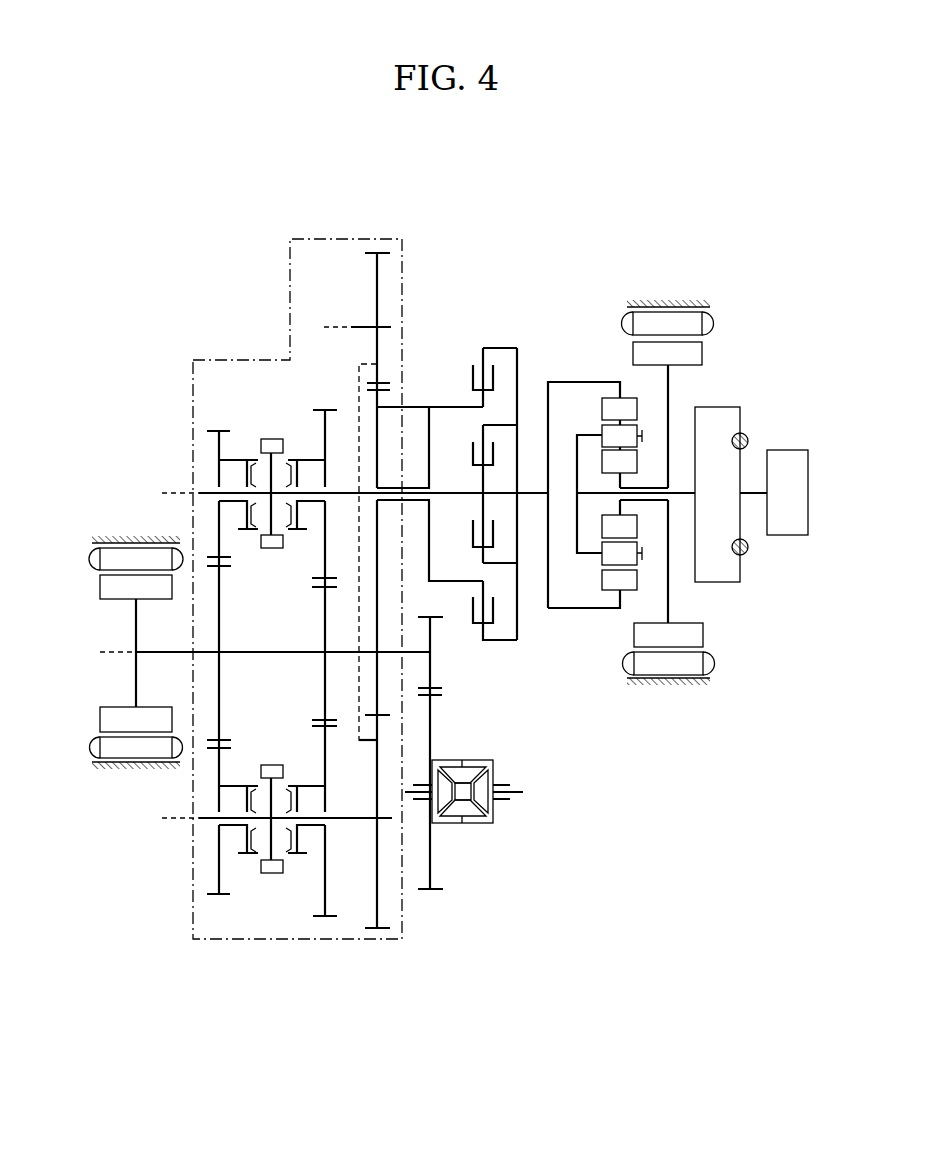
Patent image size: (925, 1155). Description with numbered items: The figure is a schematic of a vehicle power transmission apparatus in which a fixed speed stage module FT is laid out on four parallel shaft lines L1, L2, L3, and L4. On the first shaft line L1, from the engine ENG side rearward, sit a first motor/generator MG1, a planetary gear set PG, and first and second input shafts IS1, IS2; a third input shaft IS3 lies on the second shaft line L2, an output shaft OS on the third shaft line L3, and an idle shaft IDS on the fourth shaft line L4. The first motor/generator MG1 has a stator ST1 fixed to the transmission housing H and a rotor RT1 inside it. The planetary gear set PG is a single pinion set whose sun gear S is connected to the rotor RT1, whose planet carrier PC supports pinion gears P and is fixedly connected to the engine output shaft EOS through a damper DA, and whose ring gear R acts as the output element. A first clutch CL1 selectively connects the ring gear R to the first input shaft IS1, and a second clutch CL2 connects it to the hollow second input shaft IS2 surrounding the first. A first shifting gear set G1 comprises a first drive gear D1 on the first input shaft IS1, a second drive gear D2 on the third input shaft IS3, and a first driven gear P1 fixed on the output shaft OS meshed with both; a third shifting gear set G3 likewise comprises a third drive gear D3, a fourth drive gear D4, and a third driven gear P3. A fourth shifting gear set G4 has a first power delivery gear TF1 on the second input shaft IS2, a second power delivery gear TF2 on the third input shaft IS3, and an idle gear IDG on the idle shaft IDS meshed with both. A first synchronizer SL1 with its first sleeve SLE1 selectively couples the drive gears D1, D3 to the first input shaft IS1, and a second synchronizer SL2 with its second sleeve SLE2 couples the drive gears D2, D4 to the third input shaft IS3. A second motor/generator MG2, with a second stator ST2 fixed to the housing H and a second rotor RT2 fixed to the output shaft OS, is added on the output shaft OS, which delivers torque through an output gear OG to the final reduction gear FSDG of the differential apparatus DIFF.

The fixed speed stage module FT is at (395, 233).
The idle gear IDG is at (383, 277).
The idle shaft IDS is at (380, 353).
The fourth shaft line L4 is at (325, 326).
The first power delivery gear TF1 is at (380, 406).
The second power delivery gear TF2 is at (388, 910).
The first clutch CL1 is at (496, 425).
The second clutch CL2 is at (490, 352).
The planetary gear set PG is at (602, 375).
The planet carrier PC is at (590, 433).
The ring gear R is at (619, 409).
The pinion gears P is at (622, 436).
The sun gear S is at (619, 461).
The transmission housing H is at (672, 305).
The stator ST1 is at (668, 323).
The rotor RT1 is at (669, 508).
The first motor/generator MG1 is at (712, 312).
The second stator ST2 is at (136, 559).
The second rotor RT2 is at (136, 666).
The second motor/generator MG2 is at (92, 548).
The damper DA is at (748, 437).
The engine ENG is at (787, 492).
The engine output shaft EOS is at (757, 500).
The first shaft line L1 is at (453, 492).
The second shaft line L2 is at (266, 817).
The third shaft line L3 is at (252, 651).
The first input shaft IS1 is at (452, 490).
The second input shaft IS2 is at (430, 506).
The third input shaft IS3 is at (350, 822).
The first drive gear D1 is at (217, 452).
The second drive gear D2 is at (217, 883).
The third drive gear D3 is at (326, 462).
The fourth drive gear D4 is at (325, 878).
The first driven gear P1 is at (219, 608).
The third driven gear P3 is at (325, 605).
The output shaft OS is at (297, 654).
The output gear OG is at (433, 672).
The final reduction gear FSDG is at (432, 722).
The differential apparatus DIFF is at (496, 764).
The first synchronizer SL1 is at (268, 436).
The first sleeve SLE1 is at (284, 444).
The second synchronizer SL2 is at (260, 880).
The second sleeve SLE2 is at (280, 875).
The first shifting gear set G1 is at (214, 900).
The third shifting gear set G3 is at (325, 924).
The fourth shifting gear set G4 is at (378, 936).